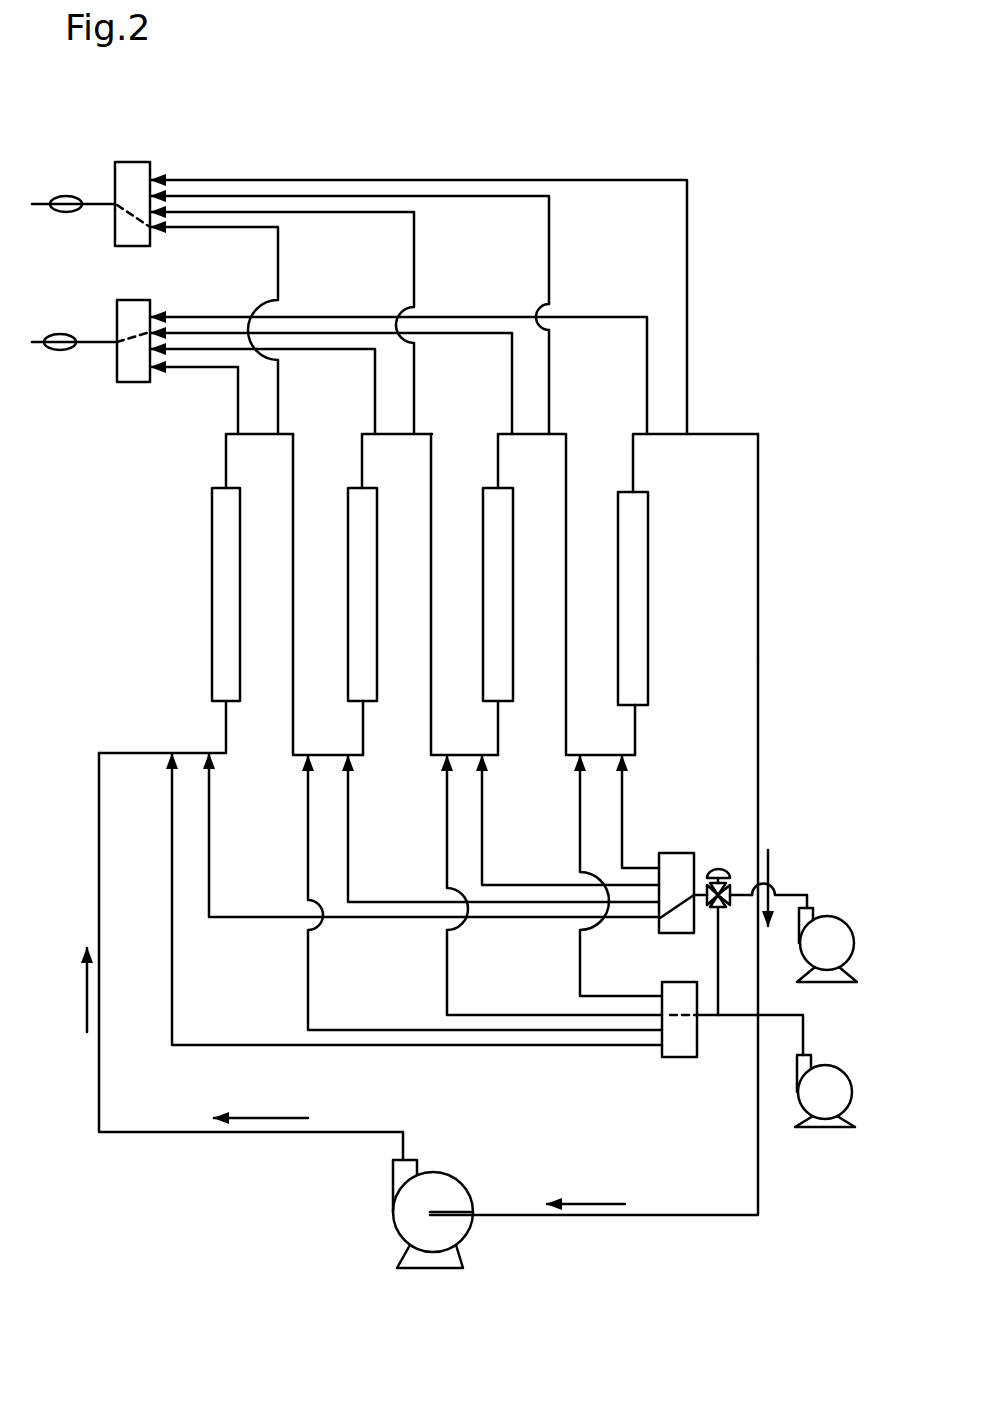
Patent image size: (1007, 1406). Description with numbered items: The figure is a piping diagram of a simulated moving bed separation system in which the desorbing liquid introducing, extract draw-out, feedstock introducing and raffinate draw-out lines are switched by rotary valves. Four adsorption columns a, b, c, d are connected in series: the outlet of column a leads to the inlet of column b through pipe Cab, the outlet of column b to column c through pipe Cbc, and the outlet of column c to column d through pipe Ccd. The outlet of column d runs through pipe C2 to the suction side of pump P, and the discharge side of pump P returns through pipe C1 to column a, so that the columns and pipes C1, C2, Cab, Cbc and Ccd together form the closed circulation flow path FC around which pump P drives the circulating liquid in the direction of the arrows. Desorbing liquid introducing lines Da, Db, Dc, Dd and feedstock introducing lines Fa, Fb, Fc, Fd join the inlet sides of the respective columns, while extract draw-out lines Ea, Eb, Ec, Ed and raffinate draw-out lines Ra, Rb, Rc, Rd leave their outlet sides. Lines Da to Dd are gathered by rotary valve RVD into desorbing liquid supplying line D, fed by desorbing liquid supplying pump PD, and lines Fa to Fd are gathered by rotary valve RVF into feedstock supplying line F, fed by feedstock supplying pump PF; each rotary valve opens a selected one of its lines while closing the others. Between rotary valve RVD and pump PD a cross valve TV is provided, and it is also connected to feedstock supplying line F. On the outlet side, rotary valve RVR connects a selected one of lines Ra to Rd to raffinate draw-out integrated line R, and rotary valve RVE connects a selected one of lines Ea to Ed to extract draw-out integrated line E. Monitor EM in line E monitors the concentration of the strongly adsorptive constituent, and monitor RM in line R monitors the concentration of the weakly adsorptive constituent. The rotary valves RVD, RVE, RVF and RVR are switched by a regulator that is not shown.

The rotary valve RVE is at (131, 182).
The rotary valve RVR is at (135, 368).
The rotary valve RVD is at (677, 862).
The rotary valve RVF is at (680, 1048).
The monitor EM is at (58, 196).
The monitor RM is at (58, 334).
The extract draw-out integrated line E is at (88, 200).
The raffinate draw-out integrated line R is at (88, 338).
The desorbing liquid supplying line D is at (788, 890).
The feedstock supplying line F is at (773, 1012).
The extract draw-out line Ea is at (232, 233).
The extract draw-out line Eb is at (366, 217).
The extract draw-out line Ec is at (500, 200).
The extract draw-out line Ed is at (640, 184).
The raffinate draw-out line Ra is at (224, 371).
The raffinate draw-out line Rb is at (355, 353).
The raffinate draw-out line Rc is at (493, 337).
The raffinate draw-out line Rd is at (632, 321).
The desorbing liquid introducing line Da is at (245, 913).
The desorbing liquid introducing line Db is at (390, 898).
The desorbing liquid introducing line Dc is at (514, 882).
The desorbing liquid introducing line Dd is at (641, 864).
The feedstock introducing line Fa is at (230, 1042).
The feedstock introducing line Fb is at (372, 1027).
The feedstock introducing line Fc is at (502, 1012).
The feedstock introducing line Fd is at (612, 994).
The column a is at (196, 593).
The column b is at (390, 594).
The column c is at (524, 594).
The column d is at (688, 594).
The pipe Cab is at (294, 608).
The pipe Cbc is at (432, 608).
The pipe Ccd is at (568, 608).
The pipe C1 is at (163, 1134).
The pipe C2 is at (759, 614).
The circulation flow path FC is at (759, 728).
The cross valve TV is at (718, 877).
The pump P is at (437, 1195).
The desorbing liquid supplying pump PD is at (826, 935).
The feedstock supplying pump PF is at (824, 1080).